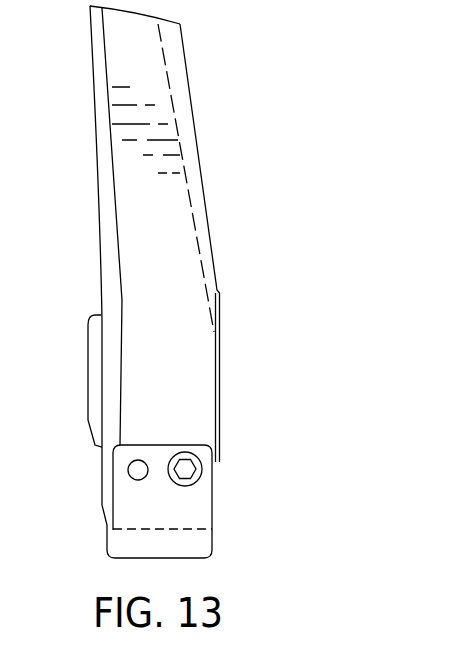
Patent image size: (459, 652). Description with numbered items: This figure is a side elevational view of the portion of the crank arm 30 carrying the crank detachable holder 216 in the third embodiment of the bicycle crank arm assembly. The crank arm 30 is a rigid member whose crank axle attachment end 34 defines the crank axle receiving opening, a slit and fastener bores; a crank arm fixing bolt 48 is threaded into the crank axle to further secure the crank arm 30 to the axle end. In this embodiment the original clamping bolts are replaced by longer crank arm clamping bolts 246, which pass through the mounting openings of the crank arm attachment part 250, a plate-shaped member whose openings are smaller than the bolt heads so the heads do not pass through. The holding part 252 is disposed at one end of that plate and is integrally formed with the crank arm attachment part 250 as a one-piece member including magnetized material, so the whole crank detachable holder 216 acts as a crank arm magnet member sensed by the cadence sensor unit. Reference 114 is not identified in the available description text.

The crank arm 30 is at (86, 70).
The inner panel 114 is at (240, 106).
The crank axle attachment end 34 is at (177, 390).
The crank arm fixing bolt 48 is at (88, 333).
The crank detachable holder 216 is at (86, 556).
The holding part 252 is at (187, 558).
The crank arm attachment part 250 is at (125, 489).
The crank arm clamping bolts 246 is at (142, 480).